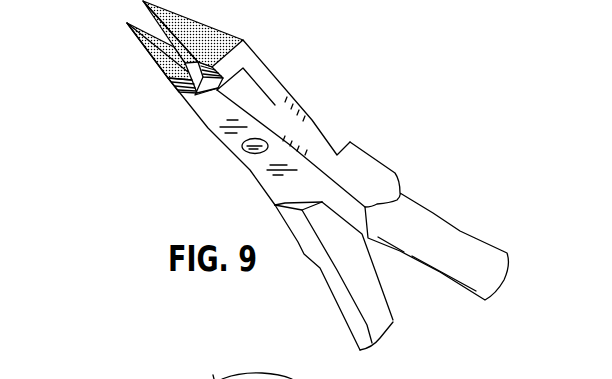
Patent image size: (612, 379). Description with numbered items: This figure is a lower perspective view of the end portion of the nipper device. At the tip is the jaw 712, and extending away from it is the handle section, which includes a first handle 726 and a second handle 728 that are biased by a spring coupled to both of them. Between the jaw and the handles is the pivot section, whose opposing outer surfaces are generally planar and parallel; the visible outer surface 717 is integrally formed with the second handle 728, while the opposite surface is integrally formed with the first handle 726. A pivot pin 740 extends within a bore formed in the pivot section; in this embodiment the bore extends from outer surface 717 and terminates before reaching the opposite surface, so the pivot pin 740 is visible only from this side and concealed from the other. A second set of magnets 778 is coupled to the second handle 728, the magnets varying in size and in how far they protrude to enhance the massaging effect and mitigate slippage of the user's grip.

The jaw 712 is at (197, 49).
The outer surface 717 is at (213, 121).
The first handle 726 is at (375, 322).
The second handle 728 is at (492, 277).
The pivot pin 740 is at (248, 151).
The second set of magnets 778 is at (247, 33).